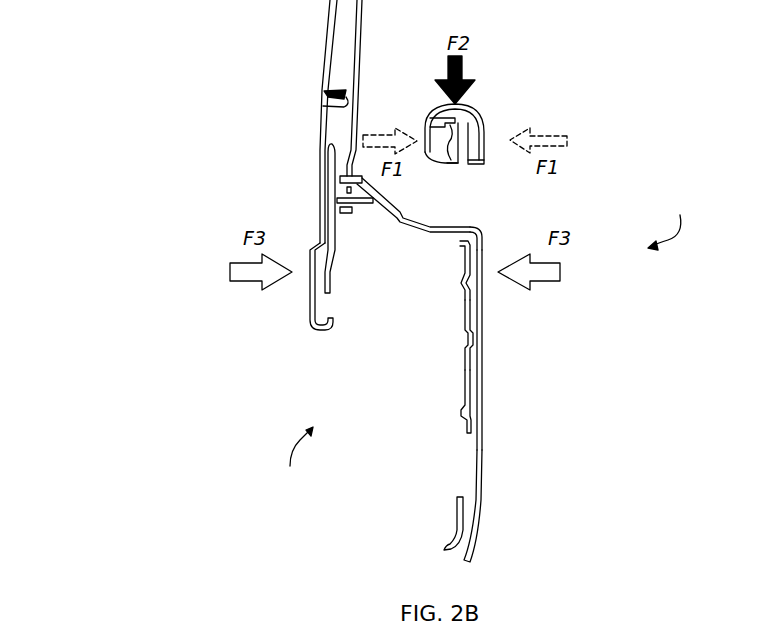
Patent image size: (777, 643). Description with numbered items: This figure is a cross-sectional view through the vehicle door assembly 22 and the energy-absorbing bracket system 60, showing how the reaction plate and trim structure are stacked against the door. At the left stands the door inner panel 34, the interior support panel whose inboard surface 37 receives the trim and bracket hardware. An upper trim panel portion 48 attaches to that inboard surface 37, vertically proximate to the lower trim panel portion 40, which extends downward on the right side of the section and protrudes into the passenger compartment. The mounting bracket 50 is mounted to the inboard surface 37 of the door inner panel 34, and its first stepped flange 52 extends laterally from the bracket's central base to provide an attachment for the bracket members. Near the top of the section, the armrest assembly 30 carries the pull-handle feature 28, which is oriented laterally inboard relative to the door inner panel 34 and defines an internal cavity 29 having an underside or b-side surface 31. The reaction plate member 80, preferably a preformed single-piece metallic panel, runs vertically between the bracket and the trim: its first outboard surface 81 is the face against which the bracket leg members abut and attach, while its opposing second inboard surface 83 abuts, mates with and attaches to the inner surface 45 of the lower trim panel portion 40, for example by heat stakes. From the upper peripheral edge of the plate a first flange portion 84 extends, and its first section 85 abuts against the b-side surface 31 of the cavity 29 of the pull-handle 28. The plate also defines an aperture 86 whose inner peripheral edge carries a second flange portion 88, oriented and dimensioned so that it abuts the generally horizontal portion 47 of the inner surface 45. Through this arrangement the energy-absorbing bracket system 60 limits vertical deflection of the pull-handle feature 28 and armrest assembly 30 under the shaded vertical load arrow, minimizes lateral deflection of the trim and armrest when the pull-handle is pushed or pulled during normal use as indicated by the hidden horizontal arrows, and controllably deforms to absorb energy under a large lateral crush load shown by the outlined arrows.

The vehicle door assembly 22 is at (669, 222).
The pull-handle feature 28 is at (468, 108).
The cavity 29 is at (458, 170).
The armrest assembly 30 is at (388, 214).
The b-side surface 31 is at (465, 167).
The door inner panel 34 is at (322, 76).
The inboard surface 37 is at (322, 103).
The lower trim panel portion 40 is at (478, 475).
The inner surface 45 is at (460, 385).
The horizontal portion 47 is at (426, 239).
The upper trim panel portion 48 is at (363, 58).
The mounting bracket 50 is at (328, 232).
The first stepped flange 52 is at (322, 148).
The energy-absorbing bracket system 60 is at (294, 459).
The reaction plate member 80 is at (464, 427).
The first outboard surface 81 is at (456, 305).
The second inboard surface 83 is at (488, 305).
The first flange portion 84 is at (462, 130).
The first section 85 is at (427, 118).
The aperture 86 is at (463, 228).
The second flange portion 88 is at (461, 243).